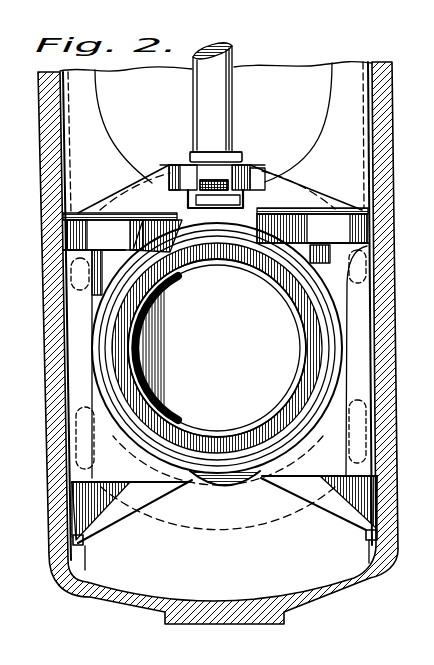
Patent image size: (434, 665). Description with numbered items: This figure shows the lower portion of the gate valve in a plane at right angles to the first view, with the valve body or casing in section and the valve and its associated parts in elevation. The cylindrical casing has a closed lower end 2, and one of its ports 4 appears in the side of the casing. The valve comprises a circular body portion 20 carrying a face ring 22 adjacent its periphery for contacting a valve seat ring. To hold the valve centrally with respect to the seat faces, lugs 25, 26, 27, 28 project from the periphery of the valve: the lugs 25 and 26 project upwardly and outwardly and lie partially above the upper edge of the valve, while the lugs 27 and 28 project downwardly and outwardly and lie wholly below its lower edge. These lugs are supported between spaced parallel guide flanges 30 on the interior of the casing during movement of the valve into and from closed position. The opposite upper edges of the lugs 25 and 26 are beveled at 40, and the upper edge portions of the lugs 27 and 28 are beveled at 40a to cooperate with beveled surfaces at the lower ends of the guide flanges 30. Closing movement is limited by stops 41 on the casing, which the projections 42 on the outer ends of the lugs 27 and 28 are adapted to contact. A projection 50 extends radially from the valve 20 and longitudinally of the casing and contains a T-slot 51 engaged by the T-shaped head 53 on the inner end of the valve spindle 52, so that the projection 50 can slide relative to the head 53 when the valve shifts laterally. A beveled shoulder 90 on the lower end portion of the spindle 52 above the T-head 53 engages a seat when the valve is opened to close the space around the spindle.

The closed lower end 2 is at (140, 606).
The port 4 is at (22, 132).
The valve body portion 20 is at (217, 348).
The face ring 22 is at (225, 458).
The lug 25 is at (127, 242).
The lug 26 is at (356, 232).
The lug 27 is at (131, 511).
The lug 28 is at (319, 503).
The guide flanges 30 is at (90, 98).
The beveled edges 40 is at (127, 210).
The beveled edge portions 40a is at (140, 484).
The stops 41 is at (86, 556).
The projections 42 is at (84, 539).
The projection 50 is at (243, 185).
The T-slot 51 is at (258, 176).
The valve spindle 52 is at (216, 102).
The T-shaped head 53 is at (197, 182).
The beveled shoulder 90 is at (204, 150).